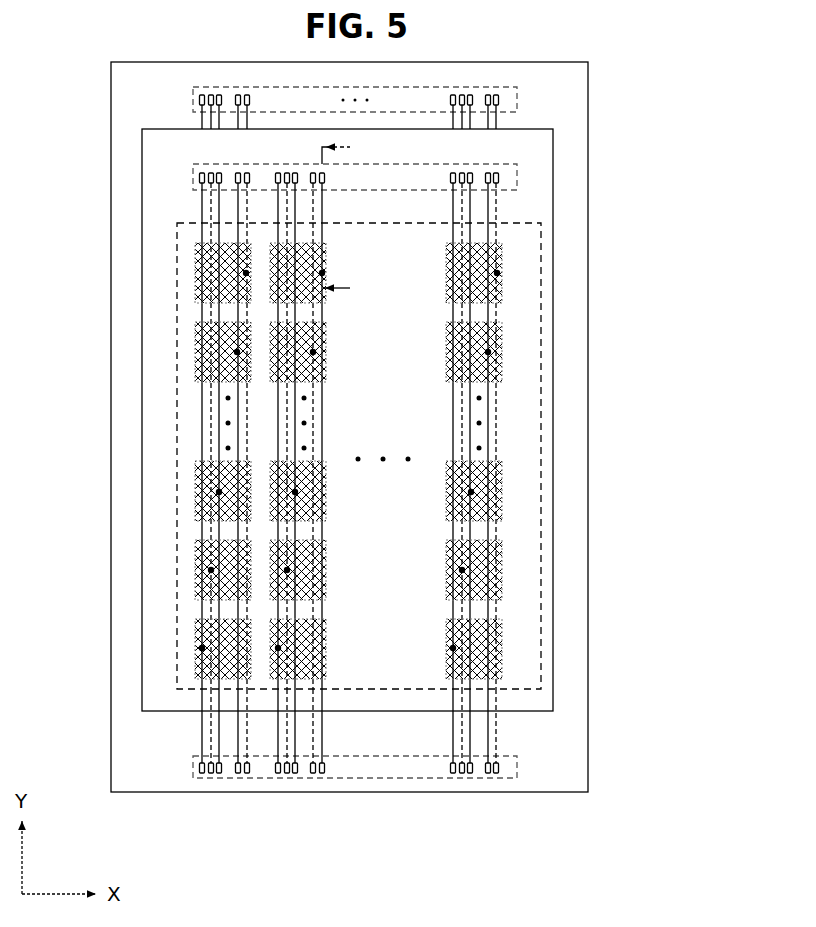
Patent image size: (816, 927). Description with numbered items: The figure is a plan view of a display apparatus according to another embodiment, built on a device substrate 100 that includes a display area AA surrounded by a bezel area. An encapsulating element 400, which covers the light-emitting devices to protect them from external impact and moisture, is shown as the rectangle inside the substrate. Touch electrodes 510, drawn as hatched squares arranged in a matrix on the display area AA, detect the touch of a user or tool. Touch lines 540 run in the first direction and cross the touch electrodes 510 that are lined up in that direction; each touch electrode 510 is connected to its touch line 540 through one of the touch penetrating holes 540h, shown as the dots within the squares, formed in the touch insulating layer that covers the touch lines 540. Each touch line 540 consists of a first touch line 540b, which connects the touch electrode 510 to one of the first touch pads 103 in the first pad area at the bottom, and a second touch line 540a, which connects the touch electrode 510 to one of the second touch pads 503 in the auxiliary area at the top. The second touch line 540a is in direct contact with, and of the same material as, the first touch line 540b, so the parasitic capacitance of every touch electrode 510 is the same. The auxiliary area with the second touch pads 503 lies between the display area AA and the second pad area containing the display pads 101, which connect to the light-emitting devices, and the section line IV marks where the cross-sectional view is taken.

The device substrate 100 is at (578, 631).
The display pad 101 is at (512, 100).
The first touch pad 103 is at (510, 768).
The second touch pad 503 is at (512, 178).
The encapsulating element 400 is at (140, 683).
The touch electrode 510 is at (195, 280).
The touch line 540 is at (452, 434).
The second touch line 540a is at (497, 215).
The first touch line 540b is at (423, 726).
The touch penetrating hole 540h is at (200, 573).
The display area AA is at (177, 448).
The section line IV-IV' IV is at (347, 217).